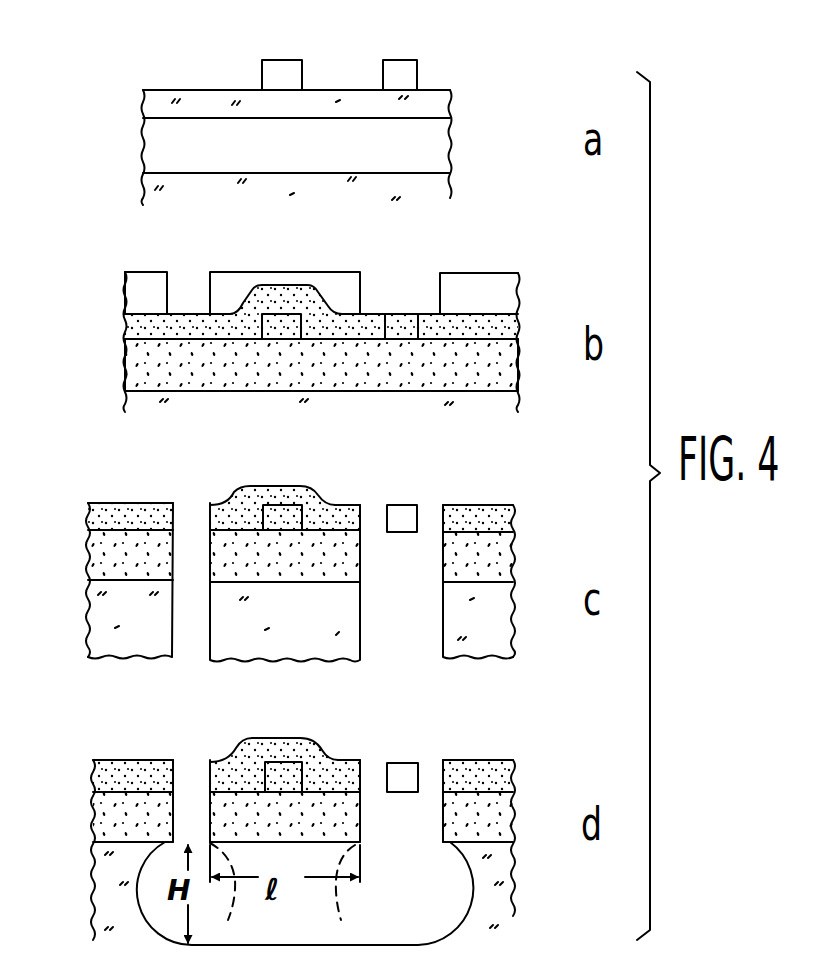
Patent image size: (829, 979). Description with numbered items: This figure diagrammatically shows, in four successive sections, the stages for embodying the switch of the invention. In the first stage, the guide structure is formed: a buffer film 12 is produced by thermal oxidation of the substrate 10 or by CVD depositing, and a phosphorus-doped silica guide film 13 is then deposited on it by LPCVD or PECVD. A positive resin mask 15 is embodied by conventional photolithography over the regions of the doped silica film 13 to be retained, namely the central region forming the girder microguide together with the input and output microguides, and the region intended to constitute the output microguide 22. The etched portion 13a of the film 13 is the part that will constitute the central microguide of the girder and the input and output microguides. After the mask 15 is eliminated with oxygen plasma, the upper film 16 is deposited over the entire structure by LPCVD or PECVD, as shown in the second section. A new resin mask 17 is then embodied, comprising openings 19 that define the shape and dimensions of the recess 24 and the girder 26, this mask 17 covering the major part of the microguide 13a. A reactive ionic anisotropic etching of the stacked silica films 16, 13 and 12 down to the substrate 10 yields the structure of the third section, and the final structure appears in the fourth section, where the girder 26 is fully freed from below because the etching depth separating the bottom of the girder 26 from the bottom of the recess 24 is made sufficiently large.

The substrate 10 is at (145, 200).
The buffer film 12 is at (150, 148).
The silica guide film 13 is at (143, 101).
The etched portion of the film 13a is at (282, 322).
The positive resin mask 15 is at (282, 70).
The upper film 16 is at (128, 327).
The resin mask 17 is at (487, 270).
The openings 19 is at (254, 252).
The output microguide 22 is at (403, 305).
The recess 24 is at (362, 945).
The girder 26 is at (240, 484).